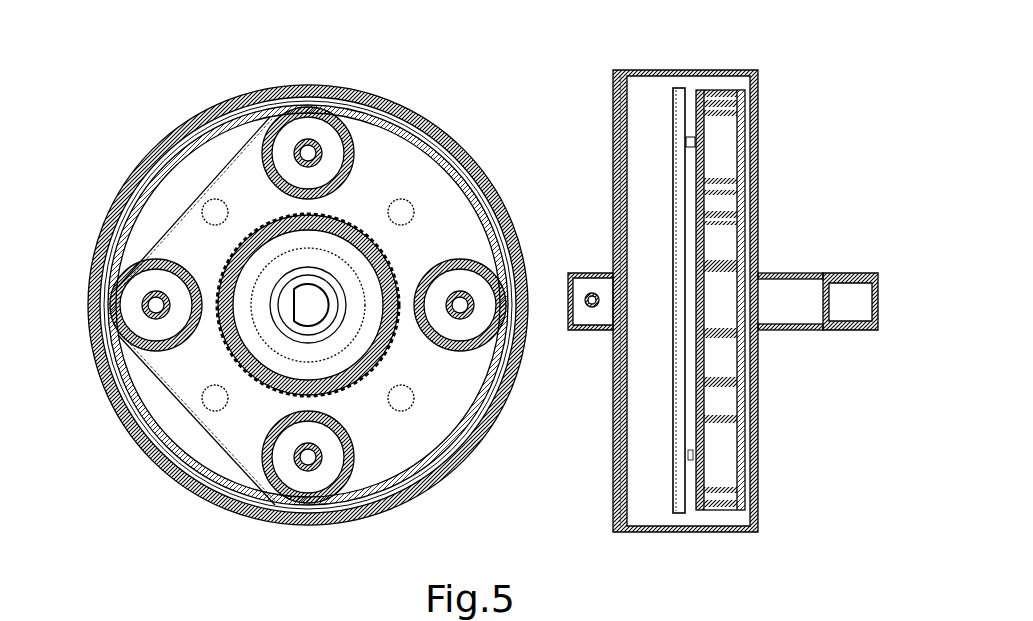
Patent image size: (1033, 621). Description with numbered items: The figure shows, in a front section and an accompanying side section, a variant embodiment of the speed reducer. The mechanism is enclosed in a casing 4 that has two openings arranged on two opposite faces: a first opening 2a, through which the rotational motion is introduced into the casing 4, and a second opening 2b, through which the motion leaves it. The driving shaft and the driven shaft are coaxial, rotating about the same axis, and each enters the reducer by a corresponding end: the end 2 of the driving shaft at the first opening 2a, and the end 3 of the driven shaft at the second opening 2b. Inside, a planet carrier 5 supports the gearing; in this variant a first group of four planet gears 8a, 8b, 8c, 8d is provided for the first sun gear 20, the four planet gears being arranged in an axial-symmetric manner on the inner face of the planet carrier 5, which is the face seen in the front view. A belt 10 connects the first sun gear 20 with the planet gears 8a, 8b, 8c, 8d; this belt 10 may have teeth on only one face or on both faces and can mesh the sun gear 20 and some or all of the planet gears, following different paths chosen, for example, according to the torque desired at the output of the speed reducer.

The end of the driving shaft 2 is at (861, 302).
The first opening 2a is at (753, 333).
The second opening 2b is at (613, 335).
The end of the driven shaft 3 is at (583, 280).
The casing 4 is at (663, 77).
The planet carrier 5 is at (165, 188).
The planet gear 8a is at (142, 300).
The planet gear 8b is at (463, 330).
The planet gear 8c is at (302, 133).
The planet gear 8d is at (313, 480).
The belt 10 is at (223, 167).
The first sun gear 20 is at (337, 242).